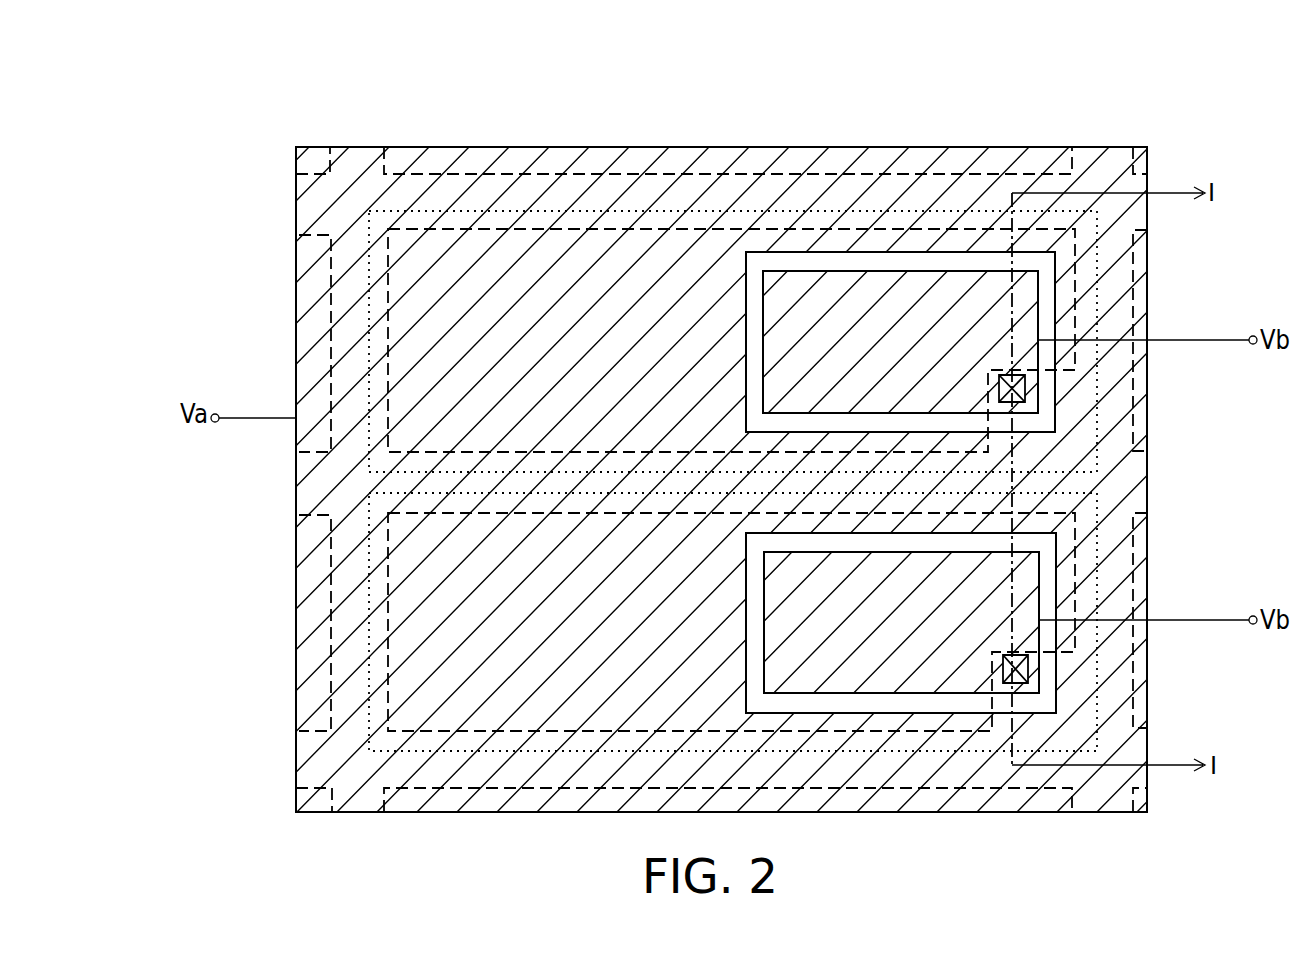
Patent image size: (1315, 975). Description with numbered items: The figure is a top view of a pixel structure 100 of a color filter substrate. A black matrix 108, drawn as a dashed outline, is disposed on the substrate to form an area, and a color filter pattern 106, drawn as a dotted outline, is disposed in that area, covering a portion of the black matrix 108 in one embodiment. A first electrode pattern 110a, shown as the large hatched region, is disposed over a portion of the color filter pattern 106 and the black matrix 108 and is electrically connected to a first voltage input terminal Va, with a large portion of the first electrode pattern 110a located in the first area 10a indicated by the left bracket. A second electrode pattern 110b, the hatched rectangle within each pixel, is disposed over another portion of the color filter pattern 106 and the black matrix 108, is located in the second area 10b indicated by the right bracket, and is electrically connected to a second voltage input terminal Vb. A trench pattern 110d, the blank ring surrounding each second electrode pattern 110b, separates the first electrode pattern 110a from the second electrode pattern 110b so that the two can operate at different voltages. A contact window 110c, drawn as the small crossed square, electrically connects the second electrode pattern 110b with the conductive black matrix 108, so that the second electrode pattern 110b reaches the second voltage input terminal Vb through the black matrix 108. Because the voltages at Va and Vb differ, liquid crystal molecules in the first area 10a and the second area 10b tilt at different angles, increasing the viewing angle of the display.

The first area 10a is at (742, 82).
The second area 10b is at (1070, 82).
The pixel structure 100 is at (168, 177).
The color filter pattern 106 is at (607, 210).
The black matrix 108 is at (500, 174).
The first electrode pattern 110a is at (296, 314).
The second electrode pattern 110b is at (1038, 297).
The contact window 110c is at (1026, 387).
The trench pattern 110d is at (1042, 260).